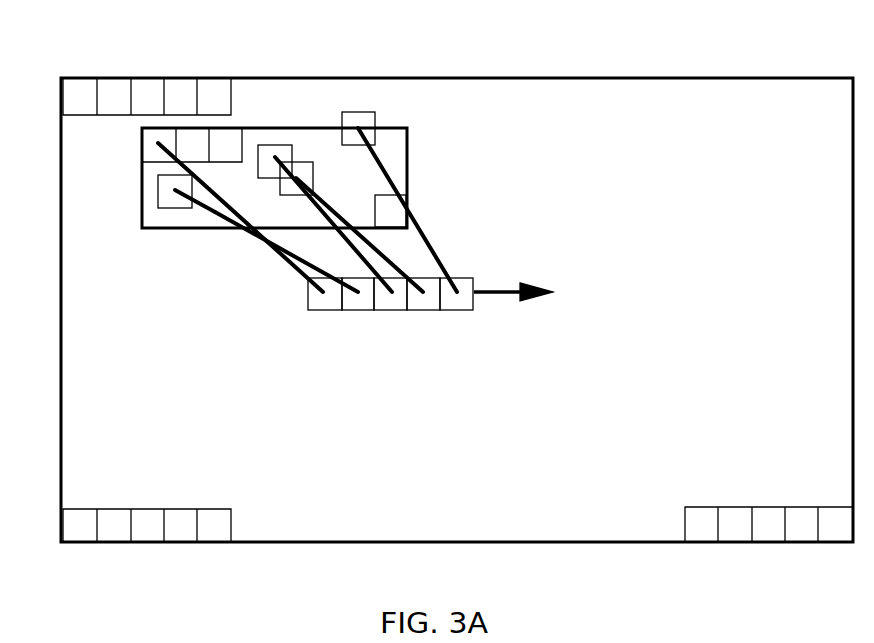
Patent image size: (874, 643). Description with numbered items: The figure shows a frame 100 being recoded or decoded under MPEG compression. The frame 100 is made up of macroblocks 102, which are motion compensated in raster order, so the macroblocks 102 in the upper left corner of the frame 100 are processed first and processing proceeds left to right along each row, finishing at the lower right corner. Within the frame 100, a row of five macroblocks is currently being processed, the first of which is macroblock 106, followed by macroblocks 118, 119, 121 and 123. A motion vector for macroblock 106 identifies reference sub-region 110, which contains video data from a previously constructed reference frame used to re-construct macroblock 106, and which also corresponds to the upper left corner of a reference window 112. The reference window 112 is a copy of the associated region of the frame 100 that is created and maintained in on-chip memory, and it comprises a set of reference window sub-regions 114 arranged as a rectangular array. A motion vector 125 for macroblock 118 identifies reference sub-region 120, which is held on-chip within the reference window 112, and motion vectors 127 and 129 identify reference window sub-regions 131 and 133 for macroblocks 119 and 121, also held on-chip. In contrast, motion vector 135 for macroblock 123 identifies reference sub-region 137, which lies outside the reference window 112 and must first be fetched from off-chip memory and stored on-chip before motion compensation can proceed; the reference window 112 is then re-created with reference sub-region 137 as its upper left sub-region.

The frame 100 is at (60, 304).
The macroblocks 102 is at (75, 88).
The macroblock 106 is at (312, 311).
The reference sub-region 110 is at (149, 143).
The reference window 112 is at (145, 182).
The reference window sub-regions 114 is at (193, 142).
The macroblock 118 is at (350, 311).
The macroblock 119 is at (383, 311).
The reference sub-region 120 is at (178, 201).
The macroblock 121 is at (432, 311).
The macroblock 123 is at (468, 311).
The motion vector 125 is at (218, 219).
The motion vector 127 is at (395, 268).
The motion vector 129 is at (383, 253).
The reference window sub-region 131 is at (286, 146).
The reference window sub-region 133 is at (297, 161).
The motion vector 135 is at (387, 167).
The reference sub-region 137 is at (358, 111).